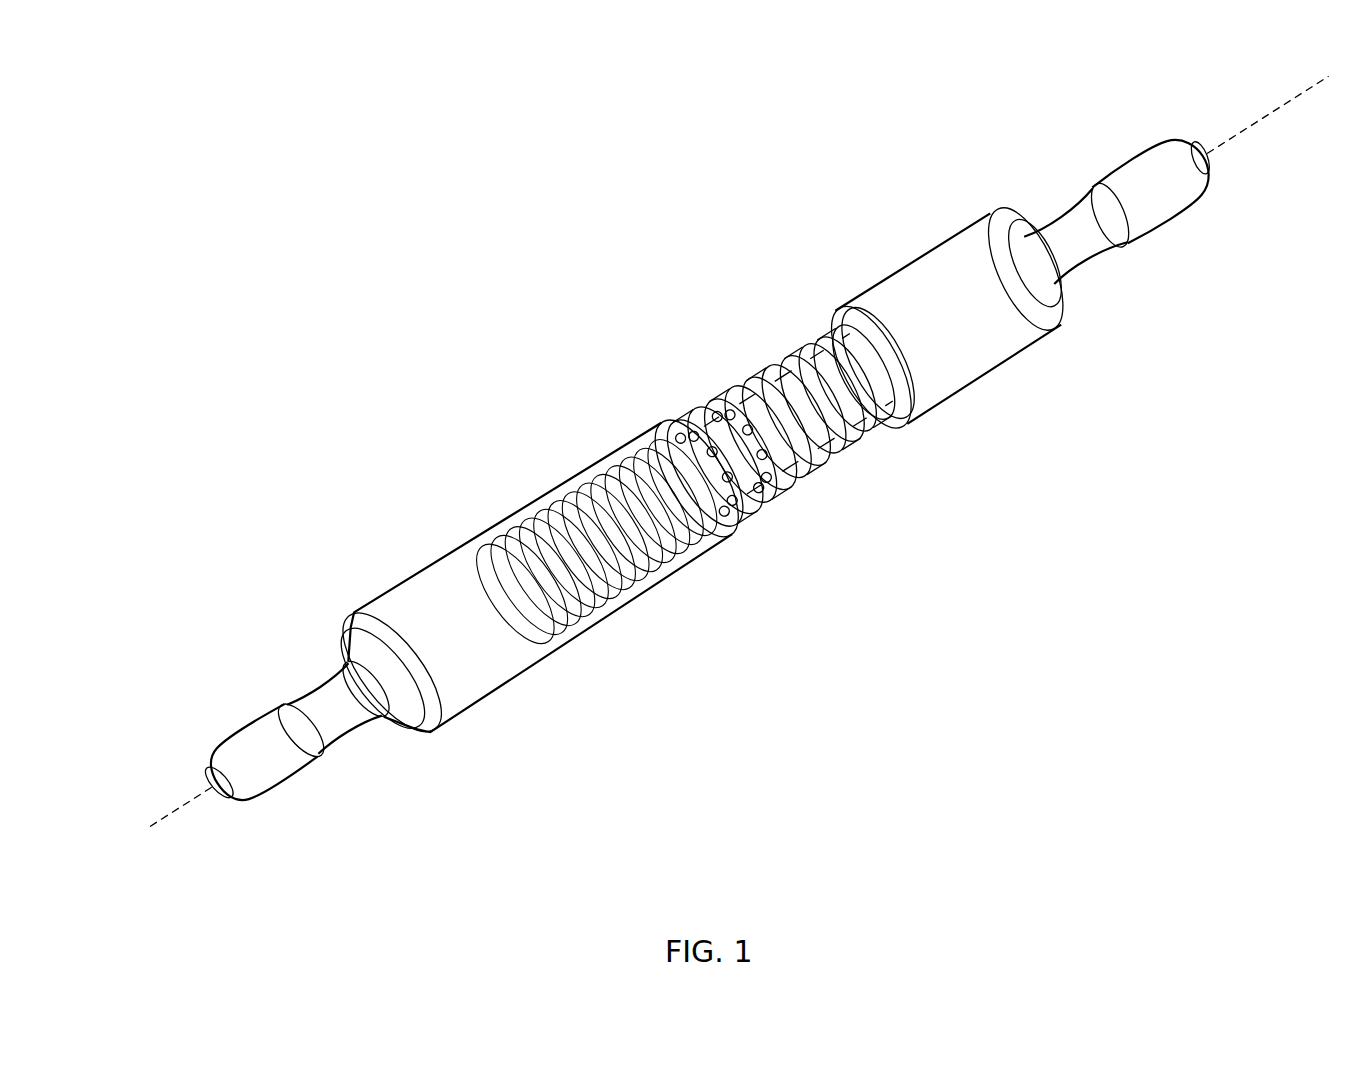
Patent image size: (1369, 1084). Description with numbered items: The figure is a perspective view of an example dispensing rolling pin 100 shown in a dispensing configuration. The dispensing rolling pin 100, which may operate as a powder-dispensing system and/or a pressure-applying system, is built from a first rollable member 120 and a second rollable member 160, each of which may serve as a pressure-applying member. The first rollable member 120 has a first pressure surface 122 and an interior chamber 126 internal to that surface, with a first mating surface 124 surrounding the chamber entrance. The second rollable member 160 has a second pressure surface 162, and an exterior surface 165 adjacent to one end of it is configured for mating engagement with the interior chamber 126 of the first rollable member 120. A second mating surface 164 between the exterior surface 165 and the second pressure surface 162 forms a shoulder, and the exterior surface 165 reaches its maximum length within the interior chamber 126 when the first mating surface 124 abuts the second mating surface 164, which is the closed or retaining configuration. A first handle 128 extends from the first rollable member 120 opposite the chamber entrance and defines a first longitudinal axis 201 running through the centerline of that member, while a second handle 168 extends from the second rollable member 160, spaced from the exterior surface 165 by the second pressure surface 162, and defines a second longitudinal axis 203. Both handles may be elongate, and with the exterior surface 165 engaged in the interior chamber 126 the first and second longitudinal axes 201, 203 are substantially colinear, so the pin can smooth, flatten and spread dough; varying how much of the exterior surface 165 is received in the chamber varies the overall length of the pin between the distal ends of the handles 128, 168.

The dispensing rolling pin 100 is at (496, 292).
The first rollable member 120 is at (253, 650).
The first pressure surface 122 is at (487, 690).
The first mating surface 124 is at (735, 529).
The interior chamber 126 is at (567, 527).
The first handle 128 is at (210, 758).
The second rollable member 160 is at (1140, 378).
The second pressure surface 162 is at (943, 408).
The second mating surface 164 is at (833, 316).
The exterior surface 165 is at (822, 388).
The second handle 168 is at (1182, 215).
The first longitudinal axis 201 is at (233, 841).
The second longitudinal axis 203 is at (1208, 107).